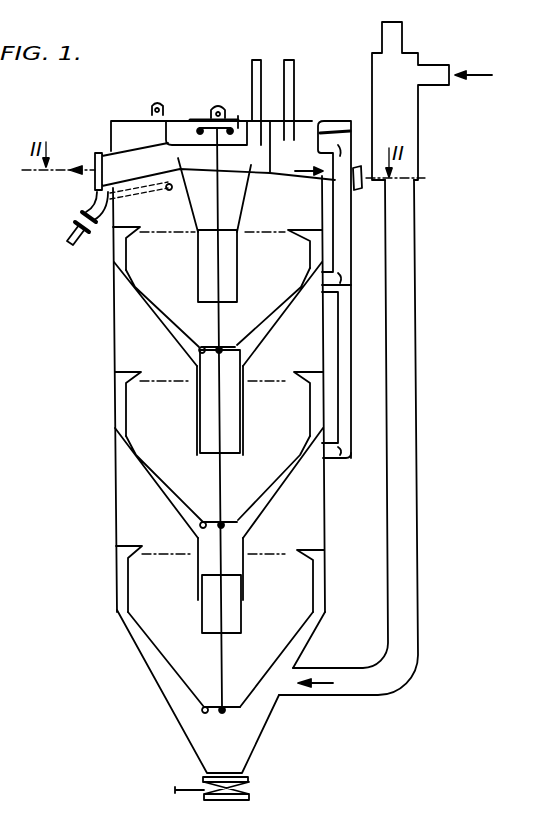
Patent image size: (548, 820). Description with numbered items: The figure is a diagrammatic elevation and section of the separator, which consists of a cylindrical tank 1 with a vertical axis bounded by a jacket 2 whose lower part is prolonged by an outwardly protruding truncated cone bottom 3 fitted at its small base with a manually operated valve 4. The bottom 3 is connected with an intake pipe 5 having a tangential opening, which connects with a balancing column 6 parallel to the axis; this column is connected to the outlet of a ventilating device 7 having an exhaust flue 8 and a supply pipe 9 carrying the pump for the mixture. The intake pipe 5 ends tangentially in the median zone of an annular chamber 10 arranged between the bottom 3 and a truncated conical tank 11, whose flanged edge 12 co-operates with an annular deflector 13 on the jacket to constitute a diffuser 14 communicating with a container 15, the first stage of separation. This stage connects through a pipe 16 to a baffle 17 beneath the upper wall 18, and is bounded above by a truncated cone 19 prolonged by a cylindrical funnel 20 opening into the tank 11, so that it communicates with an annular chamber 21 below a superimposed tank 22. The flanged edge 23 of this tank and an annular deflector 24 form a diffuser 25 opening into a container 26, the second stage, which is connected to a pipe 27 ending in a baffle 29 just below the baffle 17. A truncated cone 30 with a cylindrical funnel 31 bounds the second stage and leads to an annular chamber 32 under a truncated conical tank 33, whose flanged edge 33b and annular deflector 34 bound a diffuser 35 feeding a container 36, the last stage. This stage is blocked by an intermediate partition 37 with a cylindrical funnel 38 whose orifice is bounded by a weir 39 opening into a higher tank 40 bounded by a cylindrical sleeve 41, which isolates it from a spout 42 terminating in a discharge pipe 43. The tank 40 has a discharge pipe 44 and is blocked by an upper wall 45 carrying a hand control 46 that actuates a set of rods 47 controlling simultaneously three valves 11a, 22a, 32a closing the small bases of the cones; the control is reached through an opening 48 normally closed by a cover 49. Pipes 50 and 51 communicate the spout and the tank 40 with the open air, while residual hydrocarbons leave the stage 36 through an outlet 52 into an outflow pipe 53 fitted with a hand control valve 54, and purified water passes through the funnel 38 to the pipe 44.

The cylindrical tank 1 is at (112, 393).
The jacket 2 is at (114, 327).
The truncated cone bottom 3 is at (146, 670).
The manually operated valve 4 is at (200, 798).
The intake pipe 5 is at (340, 654).
The balancing column 6 is at (410, 430).
The ventilating device 7 is at (408, 158).
The exhaust flue 8 is at (403, 40).
The supply pipe 9 is at (449, 64).
The annular chamber 10 is at (178, 704).
The truncated conical tank 11 is at (241, 694).
The valve 11a is at (230, 710).
The flanged edge 12 is at (310, 564).
The annular deflector 13 is at (114, 546).
The diffuser 14 is at (299, 554).
The container (first stage of separation) 15 is at (170, 586).
The pipe 16 is at (367, 430).
The baffle 17 is at (351, 122).
The upper wall 18 is at (337, 120).
The truncated cone (intermediate partition) 19 is at (162, 506).
The cylindrical funnel 20 is at (202, 594).
The annular chamber 21 is at (176, 508).
The superimposed tank 22 is at (164, 476).
The valve 22a is at (228, 520).
The flanged edge 23 is at (295, 412).
The annular deflector 24 is at (113, 362).
The diffuser 25 is at (300, 376).
The container (second stage of separation) 26 is at (150, 384).
The pipe 27 is at (351, 286).
The baffle 29 is at (317, 123).
The truncated cone (intermediate partition) 30 is at (115, 300).
The cylindrical funnel 31 is at (248, 424).
The annular chamber 32 is at (160, 324).
The valve 32a is at (236, 346).
The truncated conical tank 33 is at (258, 325).
The flanged edge 33b is at (292, 256).
The annular deflector 34 is at (327, 230).
The diffuser 35 is at (297, 236).
The container (last stage of separation) 36 is at (165, 238).
The intermediate partition 37 is at (255, 176).
The cylindrical funnel 38 is at (196, 262).
The weir 39 is at (192, 177).
The higher tank 40 is at (165, 108).
The cylindrical sleeve 41 is at (263, 135).
The spout 42 is at (296, 140).
The discharge pipe 43 is at (360, 170).
The discharge pipe 44 is at (110, 150).
The upper wall 45 is at (247, 152).
The hand control 46 is at (203, 126).
The set of rods 47 is at (220, 292).
The opening 48 is at (239, 114).
The cover 49 is at (218, 106).
The pipe 50 is at (290, 60).
The pipe 51 is at (257, 60).
The outlet 52 is at (168, 188).
The outflow pipe 53 is at (90, 206).
The hand control valve 54 is at (80, 224).